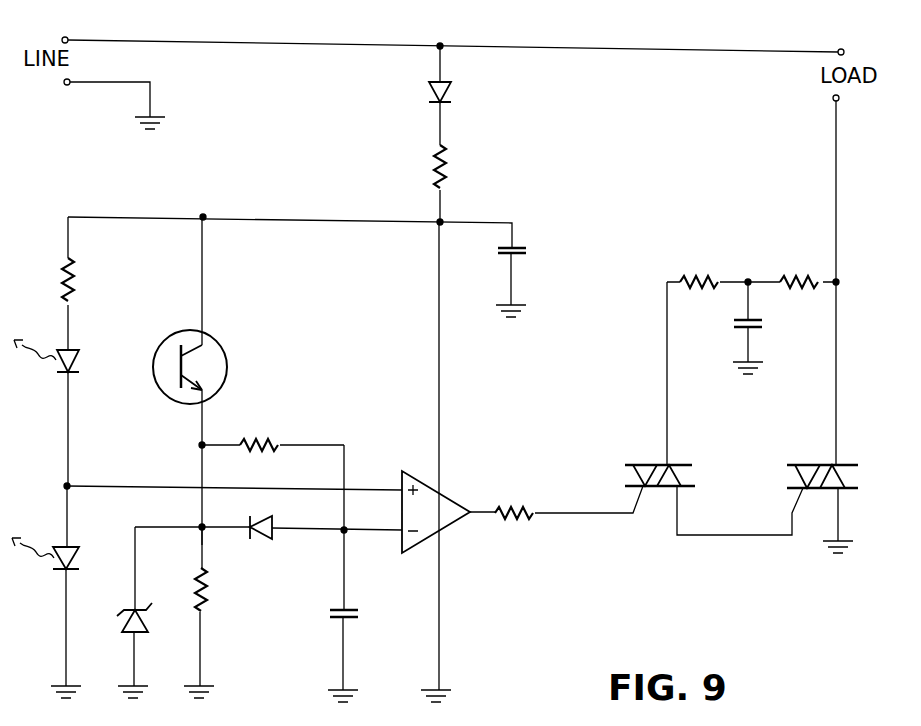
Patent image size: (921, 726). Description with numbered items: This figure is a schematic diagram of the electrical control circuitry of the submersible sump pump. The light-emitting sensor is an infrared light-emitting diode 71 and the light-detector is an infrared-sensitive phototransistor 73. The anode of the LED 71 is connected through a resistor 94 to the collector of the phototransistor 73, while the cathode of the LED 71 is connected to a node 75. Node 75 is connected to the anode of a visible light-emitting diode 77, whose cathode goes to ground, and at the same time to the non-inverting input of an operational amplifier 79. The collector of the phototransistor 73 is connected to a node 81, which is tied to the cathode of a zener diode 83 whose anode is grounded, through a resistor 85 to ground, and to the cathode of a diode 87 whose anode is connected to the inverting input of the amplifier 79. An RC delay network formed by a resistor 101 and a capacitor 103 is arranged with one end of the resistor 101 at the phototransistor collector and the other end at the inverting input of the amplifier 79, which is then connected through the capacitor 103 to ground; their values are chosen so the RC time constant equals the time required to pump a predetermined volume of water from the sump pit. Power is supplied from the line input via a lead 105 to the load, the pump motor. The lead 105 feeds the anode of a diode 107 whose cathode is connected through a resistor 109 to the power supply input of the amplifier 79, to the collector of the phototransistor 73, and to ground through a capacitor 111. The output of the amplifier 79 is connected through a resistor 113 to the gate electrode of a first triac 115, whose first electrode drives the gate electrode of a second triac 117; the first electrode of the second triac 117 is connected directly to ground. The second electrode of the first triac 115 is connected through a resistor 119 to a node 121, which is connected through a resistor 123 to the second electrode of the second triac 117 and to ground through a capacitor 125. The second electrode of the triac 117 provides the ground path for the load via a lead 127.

The power supply lead 105 is at (268, 43).
The diode 107 is at (450, 92).
The resistor 109 is at (445, 175).
The capacitor 111 is at (520, 246).
The resistor 94 is at (78, 290).
The infrared light-emitting diode 71 is at (78, 352).
The infrared-sensitive phototransistor 73 is at (213, 358).
The node 75 is at (64, 486).
The visible light-emitting diode 77 is at (62, 548).
The zener diode 83 is at (128, 625).
The node 81 is at (203, 530).
The resistor 85 is at (206, 600).
The diode 87 is at (265, 540).
The resistor 101 is at (266, 440).
The capacitor 103 is at (350, 607).
The operational amplifier 79 is at (445, 502).
The resistor 113 is at (505, 505).
The first triac 115 is at (628, 464).
The second triac 117 is at (851, 463).
The resistor 119 is at (690, 278).
The node 121 is at (748, 282).
The resistor 123 is at (795, 278).
The capacitor 125 is at (742, 326).
The lead 127 is at (836, 136).